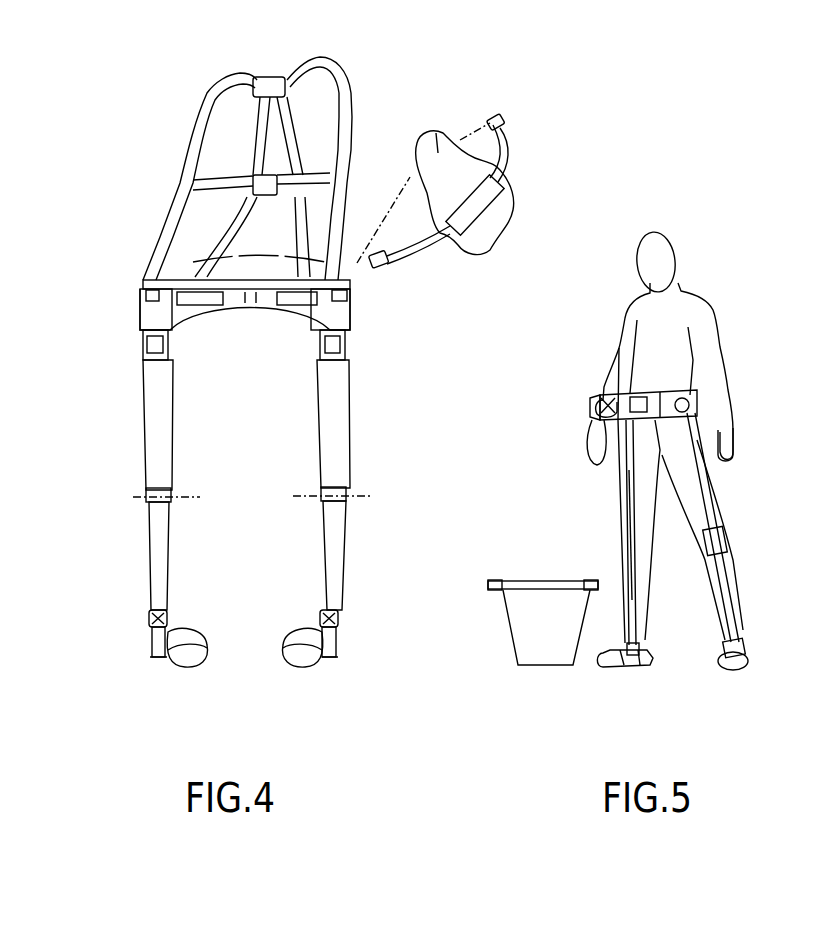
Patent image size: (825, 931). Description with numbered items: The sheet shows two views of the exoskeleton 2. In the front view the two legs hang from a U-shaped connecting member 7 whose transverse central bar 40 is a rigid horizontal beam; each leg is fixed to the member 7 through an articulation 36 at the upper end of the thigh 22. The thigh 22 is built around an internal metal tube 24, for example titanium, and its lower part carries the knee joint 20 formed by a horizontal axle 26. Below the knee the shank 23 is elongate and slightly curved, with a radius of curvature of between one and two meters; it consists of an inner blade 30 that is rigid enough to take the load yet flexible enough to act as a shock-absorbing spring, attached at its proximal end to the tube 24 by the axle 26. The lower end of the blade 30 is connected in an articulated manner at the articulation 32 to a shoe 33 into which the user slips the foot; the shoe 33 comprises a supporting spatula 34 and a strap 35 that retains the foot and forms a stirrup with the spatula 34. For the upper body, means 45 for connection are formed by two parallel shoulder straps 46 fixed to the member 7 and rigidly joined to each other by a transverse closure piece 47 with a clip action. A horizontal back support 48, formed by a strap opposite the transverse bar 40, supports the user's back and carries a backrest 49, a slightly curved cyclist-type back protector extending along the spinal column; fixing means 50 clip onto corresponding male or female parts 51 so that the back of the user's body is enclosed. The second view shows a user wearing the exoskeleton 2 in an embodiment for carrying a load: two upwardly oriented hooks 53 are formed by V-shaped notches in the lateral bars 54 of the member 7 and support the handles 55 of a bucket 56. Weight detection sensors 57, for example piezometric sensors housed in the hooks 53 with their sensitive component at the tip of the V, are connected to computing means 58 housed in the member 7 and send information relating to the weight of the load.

In FIG. 5, the exoskeleton 2 is at (735, 495).
In FIG. 4, the connecting member 7 is at (257, 303).
In FIG. 5, the knee joint 20 is at (624, 552).
In FIG. 5, the thigh 22 is at (622, 492).
In FIG. 5, the shank 23 is at (622, 592).
In FIG. 4, the internal metal tube 24 is at (155, 420).
In FIG. 4, the horizontal axle 26 is at (140, 495).
In FIG. 4, the inner blade 30 is at (155, 540).
In FIG. 4, the articulation 32 is at (149, 620).
In FIG. 4, the shoe 33 is at (207, 657).
In FIG. 4, the supporting spatula 34 is at (183, 665).
In FIG. 4, the strap 35 is at (195, 633).
In FIG. 4, the articulation 36 is at (135, 338).
In FIG. 5, the articulation 36 is at (700, 400).
In FIG. 4, the transverse central bar 40 is at (230, 305).
In FIG. 4, the means for connection to the upper part of the user's body 45 is at (183, 108).
In FIG. 4, the shoulder straps 46 is at (190, 140).
In FIG. 4, the transverse closure piece 47 is at (205, 205).
In FIG. 4, the horizontal back support 48 is at (512, 175).
In FIG. 4, the backrest 49 is at (437, 133).
In FIG. 4, the fixing means 50 is at (500, 117).
In FIG. 4, the male or female parts 51 is at (145, 290).
In FIG. 5, the hooks 53 is at (590, 430).
In FIG. 5, the lateral bars 54 is at (600, 395).
In FIG. 5, the handles 55 is at (493, 580).
In FIG. 5, the bucket 56 is at (548, 640).
In FIG. 5, the weight detection sensors 57 is at (590, 406).
In FIG. 5, the computing means 58 is at (630, 372).